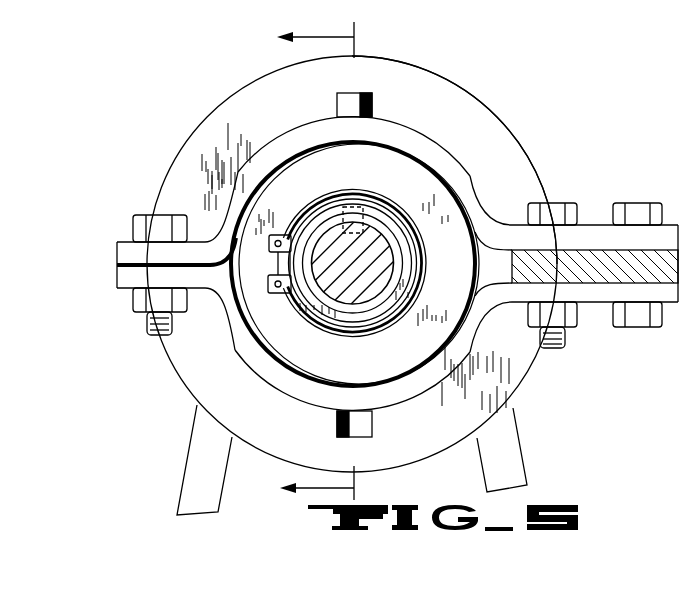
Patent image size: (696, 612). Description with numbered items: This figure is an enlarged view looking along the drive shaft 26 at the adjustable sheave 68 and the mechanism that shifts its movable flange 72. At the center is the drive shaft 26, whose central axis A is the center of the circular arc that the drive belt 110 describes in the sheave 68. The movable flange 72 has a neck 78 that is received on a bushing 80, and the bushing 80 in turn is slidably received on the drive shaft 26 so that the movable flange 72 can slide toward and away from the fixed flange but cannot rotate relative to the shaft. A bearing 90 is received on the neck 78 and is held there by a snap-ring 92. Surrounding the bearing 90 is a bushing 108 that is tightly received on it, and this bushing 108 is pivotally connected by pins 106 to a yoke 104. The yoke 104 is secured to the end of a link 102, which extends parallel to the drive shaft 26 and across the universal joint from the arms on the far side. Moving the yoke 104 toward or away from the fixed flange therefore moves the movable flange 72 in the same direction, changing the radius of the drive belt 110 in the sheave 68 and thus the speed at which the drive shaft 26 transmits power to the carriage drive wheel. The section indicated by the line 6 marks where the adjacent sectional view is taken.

The adjustable sheave 68 is at (244, 80).
The movable flange 72 is at (453, 90).
The yoke 104 is at (470, 162).
The link 102 is at (585, 252).
The pins 106 is at (370, 93).
The bushing 108 is at (268, 341).
The drive belt 110 is at (196, 436).
The bearing 90 is at (382, 195).
The snap-ring 92 is at (320, 208).
The neck 78 is at (388, 222).
The bushing 80 is at (394, 241).
The central axis A is at (353, 264).
The drive shaft 26 is at (366, 300).
The section line 6- 6 is at (325, 261).